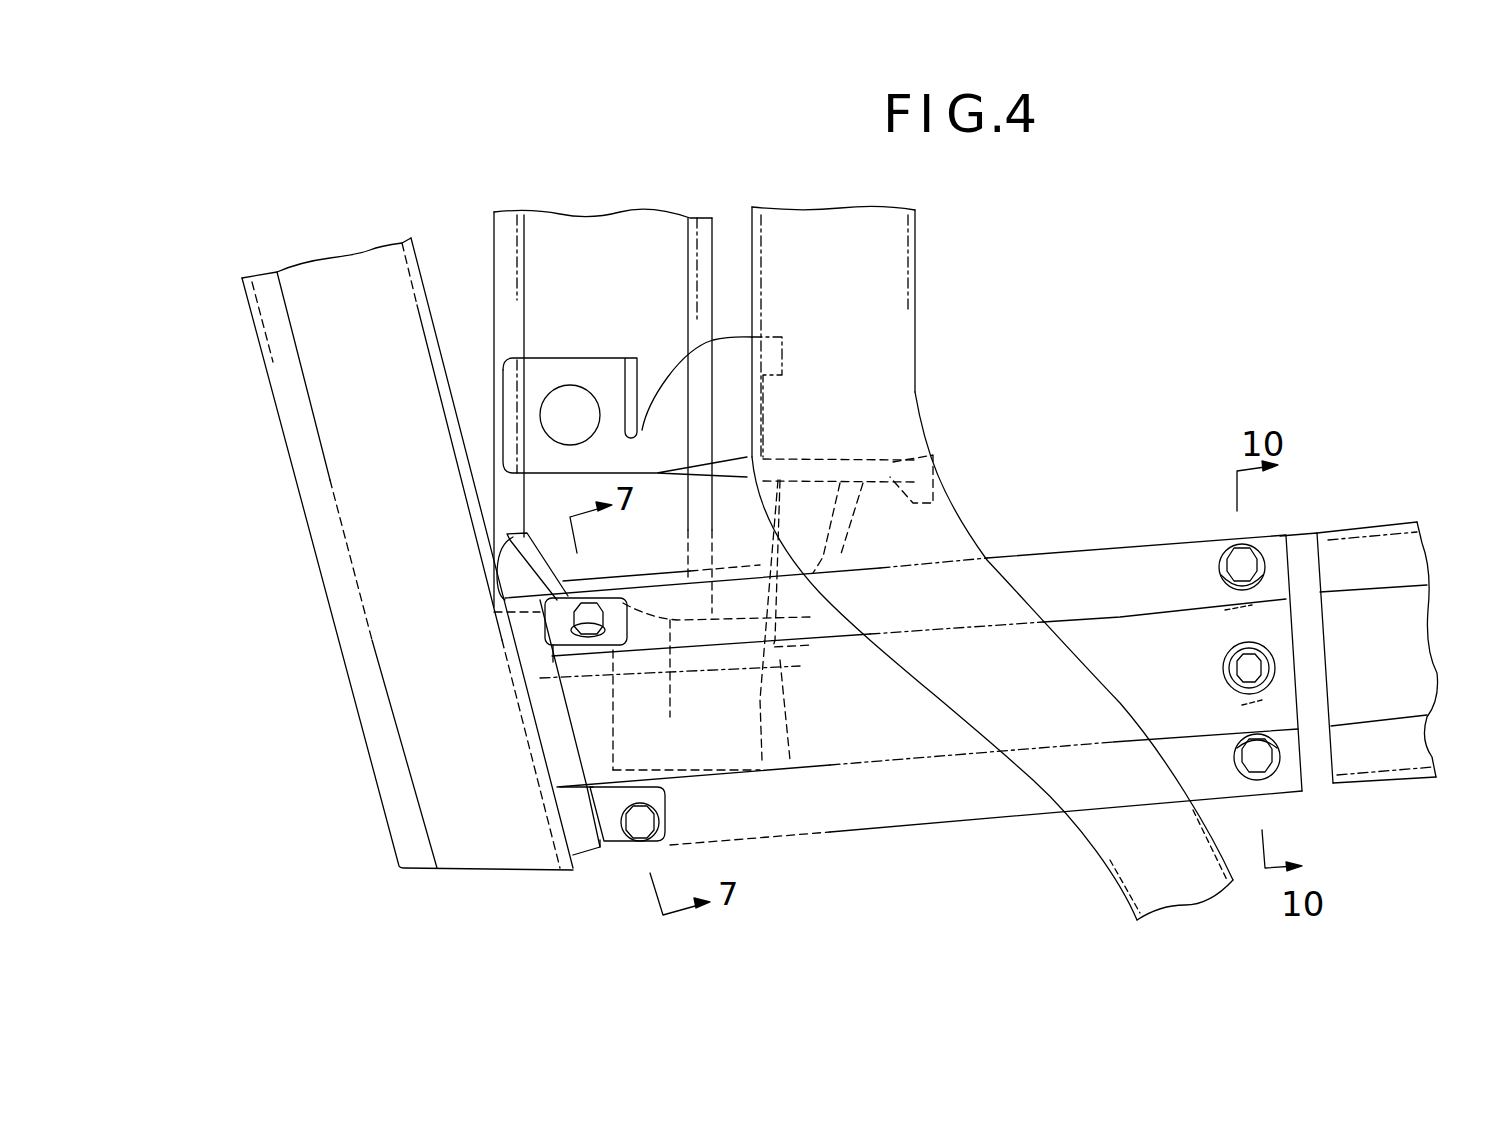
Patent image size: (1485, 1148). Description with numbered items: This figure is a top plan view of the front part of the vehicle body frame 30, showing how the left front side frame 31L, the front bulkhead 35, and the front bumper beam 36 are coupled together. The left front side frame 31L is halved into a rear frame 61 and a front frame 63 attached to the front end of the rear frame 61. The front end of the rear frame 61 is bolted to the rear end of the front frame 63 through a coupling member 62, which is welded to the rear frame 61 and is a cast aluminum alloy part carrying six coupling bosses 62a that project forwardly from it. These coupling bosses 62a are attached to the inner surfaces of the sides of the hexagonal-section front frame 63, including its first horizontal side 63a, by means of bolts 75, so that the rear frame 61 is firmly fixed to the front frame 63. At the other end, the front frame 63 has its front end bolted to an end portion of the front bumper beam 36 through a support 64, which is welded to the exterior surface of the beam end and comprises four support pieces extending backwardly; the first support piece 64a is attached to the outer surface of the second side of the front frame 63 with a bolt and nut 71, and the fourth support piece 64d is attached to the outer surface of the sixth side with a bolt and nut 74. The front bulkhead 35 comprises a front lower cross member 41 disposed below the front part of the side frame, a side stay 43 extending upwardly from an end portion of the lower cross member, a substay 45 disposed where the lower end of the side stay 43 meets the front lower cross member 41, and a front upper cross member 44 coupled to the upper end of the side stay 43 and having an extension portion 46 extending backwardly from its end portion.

The vehicle body frame 30 is at (274, 203).
The left front side frame 31L is at (1347, 317).
The front bulkhead 35 is at (917, 281).
The front bumper beam 36 is at (335, 450).
The front lower cross member 41 is at (662, 238).
The side stay 43 is at (677, 392).
The front upper cross member 44 is at (893, 352).
The substay 45 is at (783, 800).
The extension portion 46 is at (1107, 840).
The rear frame 61 is at (1397, 545).
The coupling member 62 is at (1303, 543).
The coupling boss 62a is at (1225, 610).
The front frame 63 is at (1100, 578).
The first horizontal side 63a is at (942, 733).
The support 64 is at (553, 740).
The first support piece 64a is at (603, 837).
The fourth support piece 64d is at (557, 632).
The bolt and nut 71 is at (640, 830).
The bolt and nut 74 is at (563, 610).
The bolt 75 is at (1222, 545).